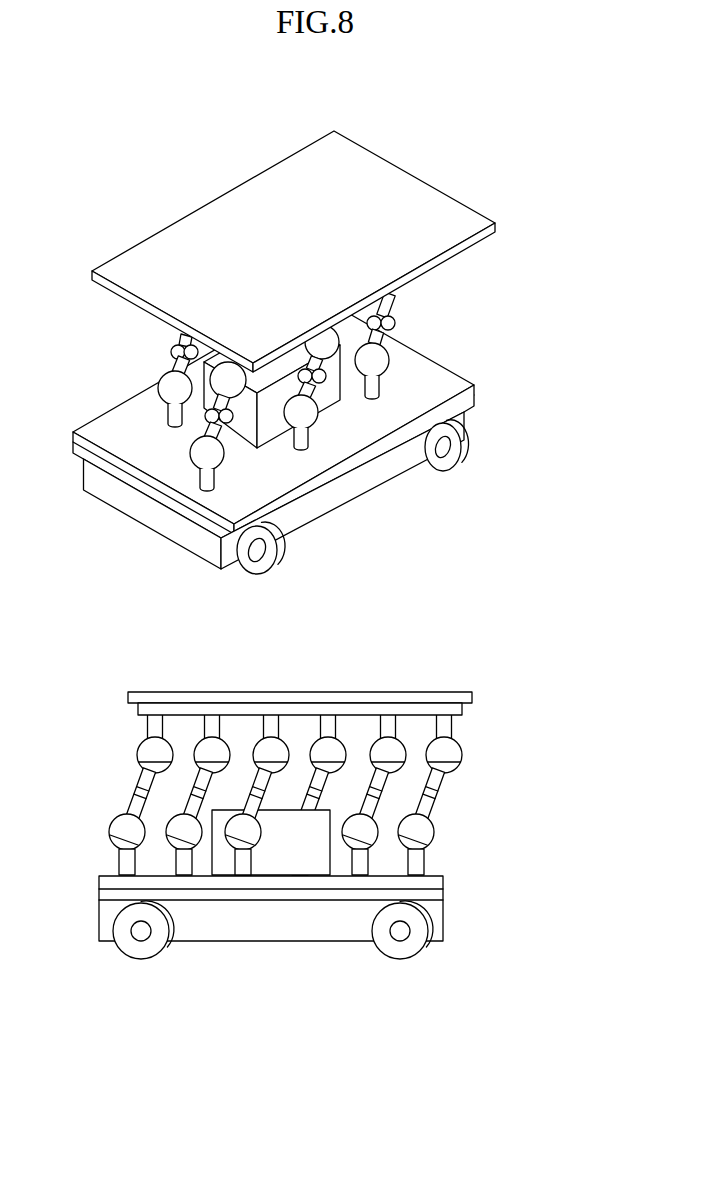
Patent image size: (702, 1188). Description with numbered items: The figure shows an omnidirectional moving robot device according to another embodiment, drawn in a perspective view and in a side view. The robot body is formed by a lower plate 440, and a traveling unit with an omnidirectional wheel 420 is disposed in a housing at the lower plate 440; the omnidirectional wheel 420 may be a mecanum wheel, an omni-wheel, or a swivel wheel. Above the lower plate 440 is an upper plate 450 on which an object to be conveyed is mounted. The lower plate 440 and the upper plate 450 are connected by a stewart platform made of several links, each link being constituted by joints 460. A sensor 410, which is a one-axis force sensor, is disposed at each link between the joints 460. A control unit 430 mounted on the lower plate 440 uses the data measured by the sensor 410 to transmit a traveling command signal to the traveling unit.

The sensor 410 is at (433, 793).
The omnidirectional wheel 420 is at (448, 466).
The control unit 430 is at (300, 830).
The lower plate 440 is at (275, 917).
The upper plate 450 is at (255, 212).
The joints 460 is at (153, 751).